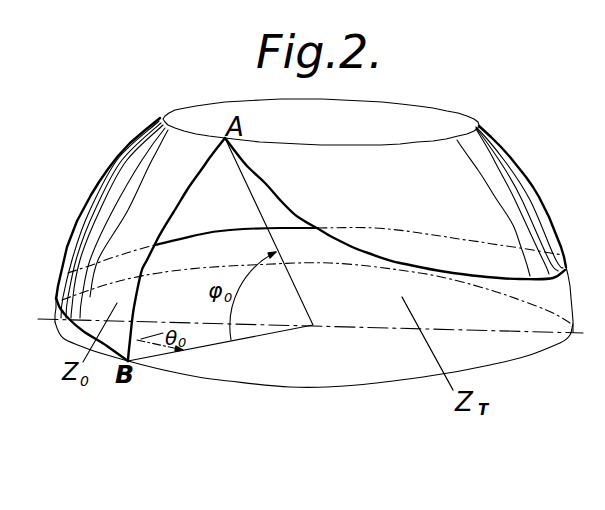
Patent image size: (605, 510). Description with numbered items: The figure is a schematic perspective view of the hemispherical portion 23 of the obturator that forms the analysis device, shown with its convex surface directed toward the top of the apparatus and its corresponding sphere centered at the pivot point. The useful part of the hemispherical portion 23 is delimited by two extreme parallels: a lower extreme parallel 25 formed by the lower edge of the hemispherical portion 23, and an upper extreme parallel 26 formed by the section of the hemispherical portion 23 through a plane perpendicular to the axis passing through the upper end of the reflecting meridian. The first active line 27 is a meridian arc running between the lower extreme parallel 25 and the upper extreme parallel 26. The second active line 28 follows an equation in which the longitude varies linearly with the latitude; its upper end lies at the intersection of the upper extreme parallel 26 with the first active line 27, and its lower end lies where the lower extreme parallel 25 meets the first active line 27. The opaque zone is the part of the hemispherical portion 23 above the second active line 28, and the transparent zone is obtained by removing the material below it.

The hemispherical portion 23 is at (553, 218).
The lower extreme parallel 25 is at (360, 387).
The upper extreme parallel 26 is at (302, 145).
The first active line 27 is at (181, 202).
The second active line 28 is at (457, 270).